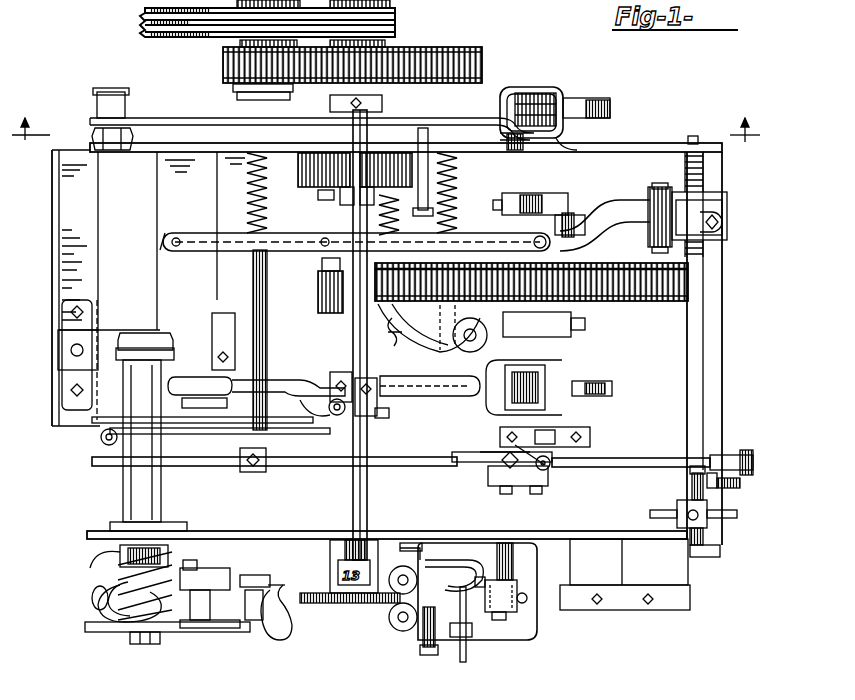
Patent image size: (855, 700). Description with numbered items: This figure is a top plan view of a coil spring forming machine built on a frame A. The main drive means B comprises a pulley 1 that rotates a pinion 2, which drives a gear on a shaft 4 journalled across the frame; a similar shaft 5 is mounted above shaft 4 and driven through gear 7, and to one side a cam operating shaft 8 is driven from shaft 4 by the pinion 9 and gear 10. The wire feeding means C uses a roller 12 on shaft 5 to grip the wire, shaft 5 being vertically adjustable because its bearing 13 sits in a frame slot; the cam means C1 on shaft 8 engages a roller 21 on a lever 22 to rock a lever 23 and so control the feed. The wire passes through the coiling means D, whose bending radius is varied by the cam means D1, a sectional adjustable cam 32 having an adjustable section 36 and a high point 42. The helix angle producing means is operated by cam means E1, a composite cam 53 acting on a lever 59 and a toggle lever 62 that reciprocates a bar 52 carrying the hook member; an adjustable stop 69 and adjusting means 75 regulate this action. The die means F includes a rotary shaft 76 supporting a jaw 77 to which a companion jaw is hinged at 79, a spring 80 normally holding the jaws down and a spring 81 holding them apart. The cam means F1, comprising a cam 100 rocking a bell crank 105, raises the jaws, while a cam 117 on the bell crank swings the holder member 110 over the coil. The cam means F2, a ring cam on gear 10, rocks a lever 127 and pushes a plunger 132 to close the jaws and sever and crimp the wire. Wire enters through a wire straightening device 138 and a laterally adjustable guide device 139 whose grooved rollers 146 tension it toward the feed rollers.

The pulley 1 is at (150, 36).
The pinion 2 is at (237, 44).
The shaft 5 is at (482, 62).
The gear 7 is at (322, 195).
The cam operating shaft 8 is at (565, 410).
The pinion 9 is at (318, 290).
The gear 10 is at (680, 306).
The feed roller 12 is at (360, 605).
The bearing 13 is at (95, 458).
The roller 21 is at (548, 90).
The lever 22 is at (215, 118).
The lever 23 is at (382, 105).
The sectional adjustable cam 32 is at (490, 450).
The cam section 36 is at (525, 486).
The high point 42 is at (608, 466).
The bar 52 is at (253, 300).
The composite adjustable cam 53 is at (500, 192).
The lever 59 is at (185, 233).
The toggle lever 62 is at (600, 240).
The adjustable stop 69 is at (425, 130).
The adjusting means 75 is at (712, 242).
The rotary shaft 76 is at (130, 640).
The jaw 77 is at (85, 632).
The hinge 79 is at (92, 598).
The spring 80 is at (92, 556).
The spring 81 is at (100, 592).
The cam 100 is at (572, 376).
The bell crank 105 is at (430, 396).
The holder member 110 is at (275, 640).
The cam 117 is at (375, 418).
The lever 127 is at (108, 336).
The plunger 132 is at (208, 345).
The wire straightening device 138 is at (605, 612).
The laterally adjustable guide device 139 is at (492, 642).
The peripherally grooved rollers 146 is at (412, 570).
The frame A is at (88, 143).
The main drive means B is at (400, 42).
The wire feeding means C is at (320, 606).
The cam means C1 is at (590, 100).
The coiling means D is at (205, 566).
The cam means D1 is at (585, 450).
The cam means E1 is at (585, 210).
The die means F is at (215, 630).
The cam means F1 is at (612, 380).
The cam means F2 is at (420, 360).
The shaft 4 is at (385, 147).